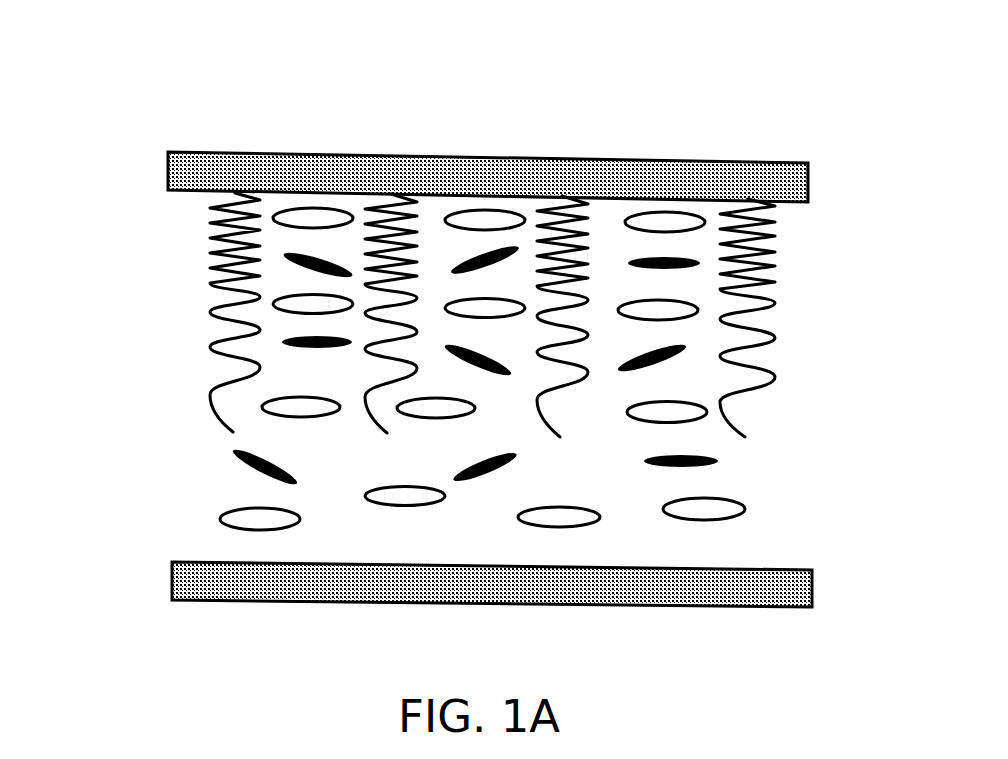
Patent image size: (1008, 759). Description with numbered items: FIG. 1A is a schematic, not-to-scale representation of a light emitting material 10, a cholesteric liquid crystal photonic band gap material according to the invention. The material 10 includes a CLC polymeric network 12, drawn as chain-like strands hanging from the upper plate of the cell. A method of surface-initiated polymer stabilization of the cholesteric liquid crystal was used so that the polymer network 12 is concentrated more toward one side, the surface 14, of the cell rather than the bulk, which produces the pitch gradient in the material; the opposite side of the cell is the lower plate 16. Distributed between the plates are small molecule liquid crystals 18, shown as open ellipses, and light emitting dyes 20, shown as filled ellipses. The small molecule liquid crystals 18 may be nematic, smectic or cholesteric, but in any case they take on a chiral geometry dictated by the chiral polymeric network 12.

The light emitting material 10 is at (182, 125).
The CLC polymeric network 12 is at (209, 340).
The surface 14 is at (600, 155).
The bottom plate / electrode 16 is at (755, 607).
The small molecule liquid crystals 18 is at (733, 500).
The light emitting dyes 20 is at (253, 470).